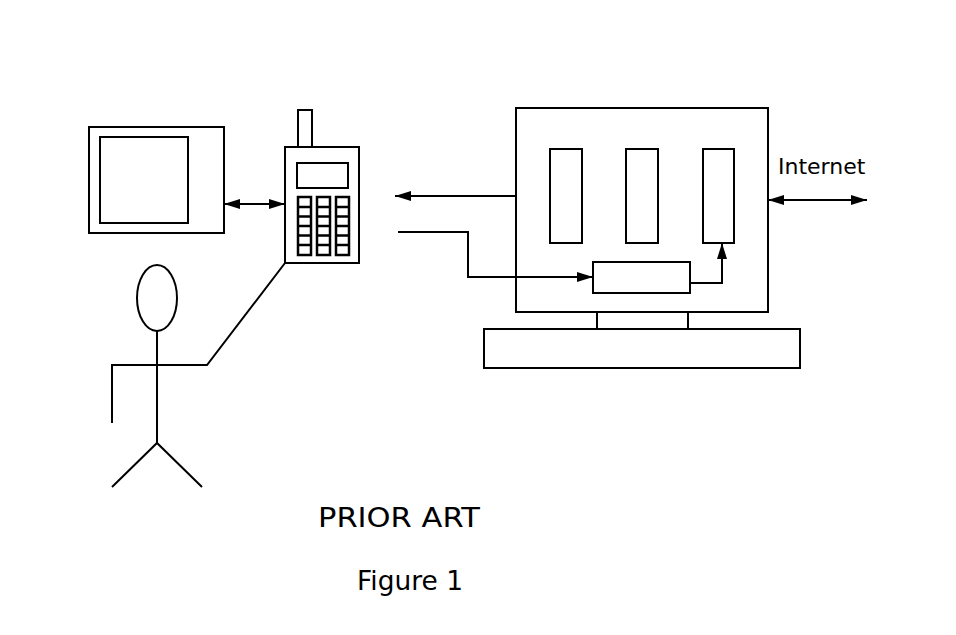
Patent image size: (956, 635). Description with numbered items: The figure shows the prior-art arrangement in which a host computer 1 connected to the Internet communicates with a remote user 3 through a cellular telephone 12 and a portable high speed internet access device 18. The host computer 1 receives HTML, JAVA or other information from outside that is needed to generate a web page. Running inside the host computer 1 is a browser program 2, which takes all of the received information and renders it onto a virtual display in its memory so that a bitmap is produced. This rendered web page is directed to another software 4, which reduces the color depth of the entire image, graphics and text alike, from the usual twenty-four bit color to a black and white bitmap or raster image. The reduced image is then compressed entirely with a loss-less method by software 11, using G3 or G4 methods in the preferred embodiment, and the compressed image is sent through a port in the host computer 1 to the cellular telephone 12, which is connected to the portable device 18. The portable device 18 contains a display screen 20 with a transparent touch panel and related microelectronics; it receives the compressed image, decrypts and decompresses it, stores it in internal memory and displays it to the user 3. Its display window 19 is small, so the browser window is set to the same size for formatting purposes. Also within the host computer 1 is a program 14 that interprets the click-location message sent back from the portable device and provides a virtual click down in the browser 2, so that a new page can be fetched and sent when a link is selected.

The host computer 1 is at (660, 230).
The browser program 2 is at (769, 135).
The remote user 3 is at (198, 375).
The software 4 is at (687, 137).
The software 11 is at (619, 134).
The cellular telephone 12 is at (365, 151).
The program 14 is at (611, 327).
The portable high speed internet access device 18 is at (139, 185).
The display window 19 is at (183, 141).
The display screen 20 is at (106, 188).